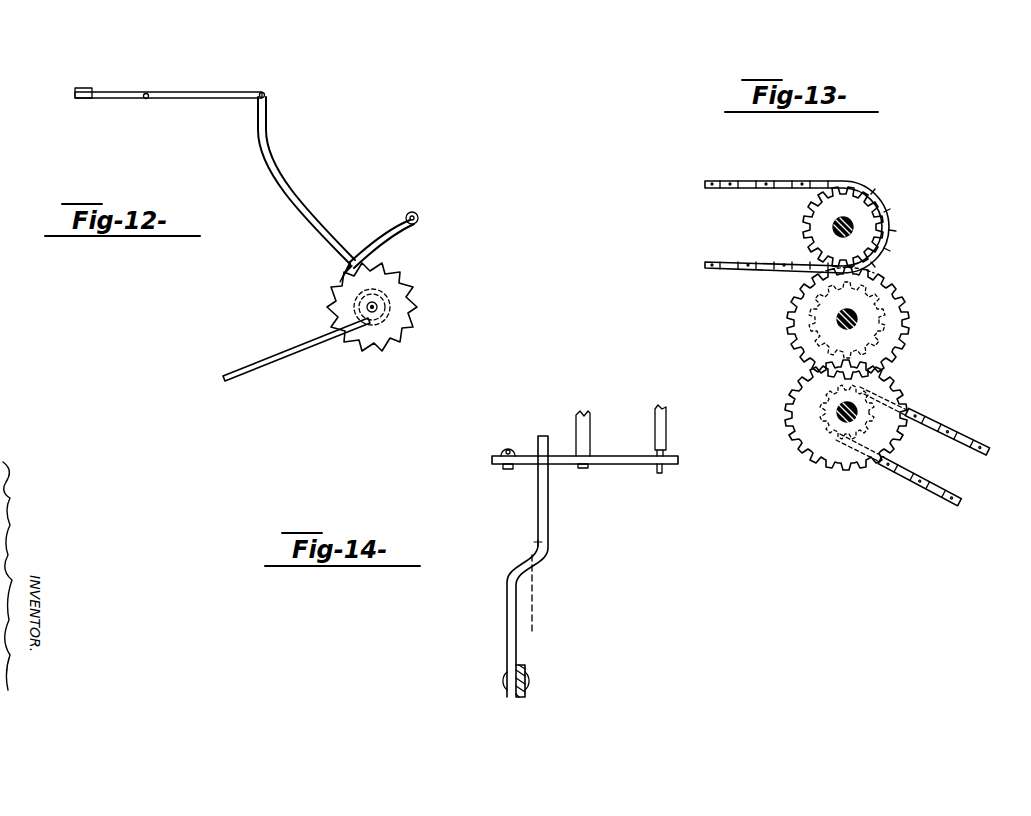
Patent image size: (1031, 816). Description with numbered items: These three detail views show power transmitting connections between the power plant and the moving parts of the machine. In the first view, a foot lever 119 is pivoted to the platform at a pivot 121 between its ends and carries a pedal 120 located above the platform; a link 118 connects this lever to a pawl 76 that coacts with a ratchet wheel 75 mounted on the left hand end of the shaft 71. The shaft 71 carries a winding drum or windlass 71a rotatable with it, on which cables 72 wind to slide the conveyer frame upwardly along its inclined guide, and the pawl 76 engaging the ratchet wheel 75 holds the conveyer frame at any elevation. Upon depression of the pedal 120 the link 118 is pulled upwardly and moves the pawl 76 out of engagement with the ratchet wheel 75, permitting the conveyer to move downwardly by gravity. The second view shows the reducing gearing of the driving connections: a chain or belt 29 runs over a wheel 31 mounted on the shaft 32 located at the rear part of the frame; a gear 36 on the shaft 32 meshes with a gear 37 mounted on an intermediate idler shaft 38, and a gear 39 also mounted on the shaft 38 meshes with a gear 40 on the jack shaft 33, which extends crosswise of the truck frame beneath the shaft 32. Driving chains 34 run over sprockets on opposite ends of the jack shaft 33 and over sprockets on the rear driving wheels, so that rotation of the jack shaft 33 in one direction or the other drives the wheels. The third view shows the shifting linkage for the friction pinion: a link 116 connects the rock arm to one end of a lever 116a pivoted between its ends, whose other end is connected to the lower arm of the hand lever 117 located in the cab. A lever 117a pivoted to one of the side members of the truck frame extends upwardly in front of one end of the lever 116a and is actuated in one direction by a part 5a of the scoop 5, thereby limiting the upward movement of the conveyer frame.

In FIG. 12, the foot lever 119 is at (178, 98).
In FIG. 12, the pedal 120 is at (82, 88).
In FIG. 12, the pivot 121 is at (146, 93).
In FIG. 12, the link 118 is at (270, 142).
In FIG. 12, the pawl 76 is at (388, 226).
In FIG. 12, the ratchet wheel 75 is at (404, 292).
In FIG. 12, the winding drum or windlass 71a is at (360, 307).
In FIG. 12, the shaft 71 is at (378, 309).
In FIG. 12, the cables 72 is at (270, 360).
In FIG. 13, the chain or belt 29 is at (740, 182).
In FIG. 13, the shaft 32 is at (851, 220).
In FIG. 13, the gear 36 is at (878, 218).
In FIG. 13, the wheel 31 is at (806, 223).
In FIG. 13, the intermediate idler shaft 38 is at (836, 311).
In FIG. 13, the gear 37 is at (800, 320).
In FIG. 13, the gear 39 is at (798, 335).
In FIG. 13, the jack shaft 33 is at (840, 405).
In FIG. 13, the gear 40 is at (800, 409).
In FIG. 13, the driving chains 34 is at (912, 476).
In FIG. 14, the link 116 is at (504, 455).
In FIG. 14, the lever 116a is at (560, 466).
In FIG. 14, the hand lever 117 is at (658, 420).
In FIG. 14, the lever 117a is at (540, 503).
In FIG. 14, the part of the scoop 5a is at (542, 545).
In FIG. 14, the scoop 5 is at (534, 592).